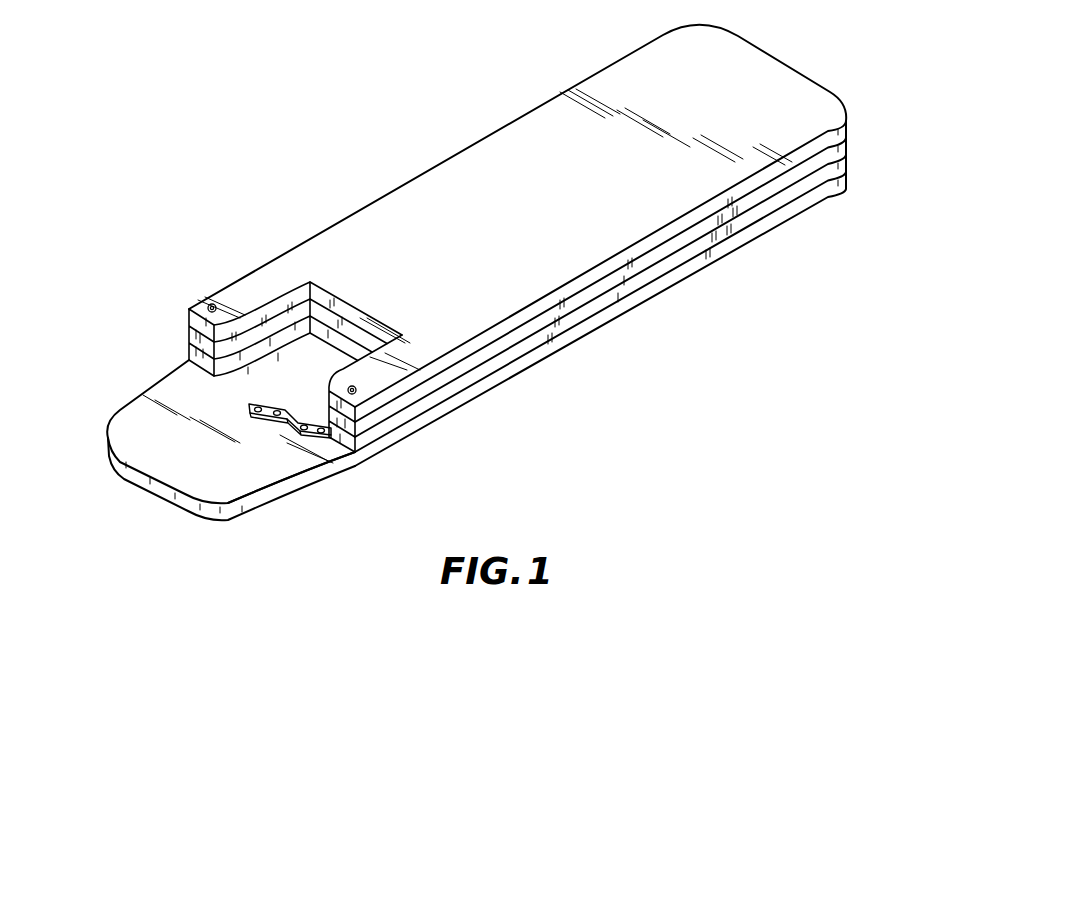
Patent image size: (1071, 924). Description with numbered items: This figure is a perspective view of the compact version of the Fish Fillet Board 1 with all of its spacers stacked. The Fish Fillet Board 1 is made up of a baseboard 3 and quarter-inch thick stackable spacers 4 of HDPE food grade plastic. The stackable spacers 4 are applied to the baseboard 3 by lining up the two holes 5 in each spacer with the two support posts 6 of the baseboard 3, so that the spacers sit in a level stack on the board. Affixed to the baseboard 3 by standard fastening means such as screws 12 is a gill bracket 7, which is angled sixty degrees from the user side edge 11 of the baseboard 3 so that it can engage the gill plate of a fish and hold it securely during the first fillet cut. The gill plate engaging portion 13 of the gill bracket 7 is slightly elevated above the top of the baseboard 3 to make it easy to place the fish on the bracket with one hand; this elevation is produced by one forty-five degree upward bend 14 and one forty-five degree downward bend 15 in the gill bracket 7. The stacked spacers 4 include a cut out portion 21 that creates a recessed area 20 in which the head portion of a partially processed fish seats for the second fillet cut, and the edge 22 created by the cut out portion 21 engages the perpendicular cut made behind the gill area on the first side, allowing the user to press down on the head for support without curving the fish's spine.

The Fish Fillet Board 1 is at (378, 175).
The baseboard 3 is at (198, 432).
The stackable spacers 4 is at (532, 312).
The holes 5 is at (361, 399).
The support posts 6 is at (208, 302).
The gill bracket 7 is at (274, 427).
The user side edge 11 is at (361, 462).
The screws 12 is at (306, 434).
The gill plate engaging portion 13 is at (249, 413).
The upward bend 14 is at (299, 432).
The downward bend 15 is at (292, 421).
The recessed area 20 is at (317, 358).
The cut out portion 21 is at (403, 338).
The edge 22 is at (353, 337).